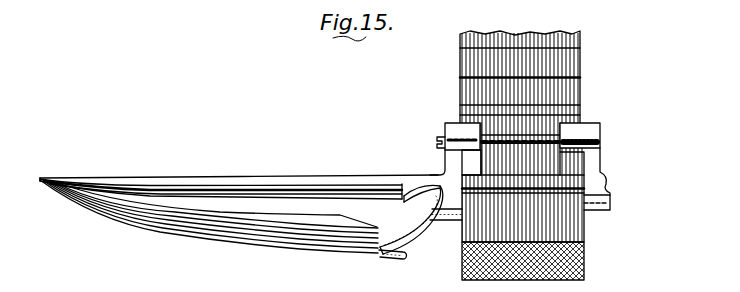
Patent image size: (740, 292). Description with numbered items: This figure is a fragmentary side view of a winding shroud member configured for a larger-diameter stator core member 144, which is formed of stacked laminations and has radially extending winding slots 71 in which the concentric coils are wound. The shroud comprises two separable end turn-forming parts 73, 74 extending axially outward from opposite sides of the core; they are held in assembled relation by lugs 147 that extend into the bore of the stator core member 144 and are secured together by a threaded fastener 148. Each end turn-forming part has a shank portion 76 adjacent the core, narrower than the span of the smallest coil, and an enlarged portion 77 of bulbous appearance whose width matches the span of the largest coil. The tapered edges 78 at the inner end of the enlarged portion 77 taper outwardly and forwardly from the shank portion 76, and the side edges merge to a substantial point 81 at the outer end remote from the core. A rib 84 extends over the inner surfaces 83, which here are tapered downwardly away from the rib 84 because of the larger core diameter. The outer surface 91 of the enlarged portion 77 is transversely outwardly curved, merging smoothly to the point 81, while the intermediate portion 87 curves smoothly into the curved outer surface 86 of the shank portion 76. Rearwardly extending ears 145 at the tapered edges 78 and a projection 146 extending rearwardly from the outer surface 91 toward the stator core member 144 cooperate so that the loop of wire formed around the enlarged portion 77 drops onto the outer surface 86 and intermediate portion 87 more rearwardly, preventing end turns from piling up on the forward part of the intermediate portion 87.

The end turn-forming part 73 is at (174, 137).
The point 81 is at (40, 178).
The rib 84 is at (202, 177).
The inner surface 83 is at (252, 185).
The outer surface 91 is at (152, 223).
The enlarged portion 77 is at (273, 217).
The rearwardly extending ear 145 is at (408, 188).
The tapered edge 78 is at (423, 187).
The intermediate portion 87 is at (402, 227).
The projection 146 is at (407, 258).
The outer surface of shank portion 86 is at (434, 211).
The shank portion 76 is at (450, 190).
The winding slot 71 is at (573, 224).
The stator core member 144 is at (583, 265).
The threaded fastener 148 is at (537, 140).
The lug 147 is at (453, 123).
The end turn-forming part 74 is at (618, 169).